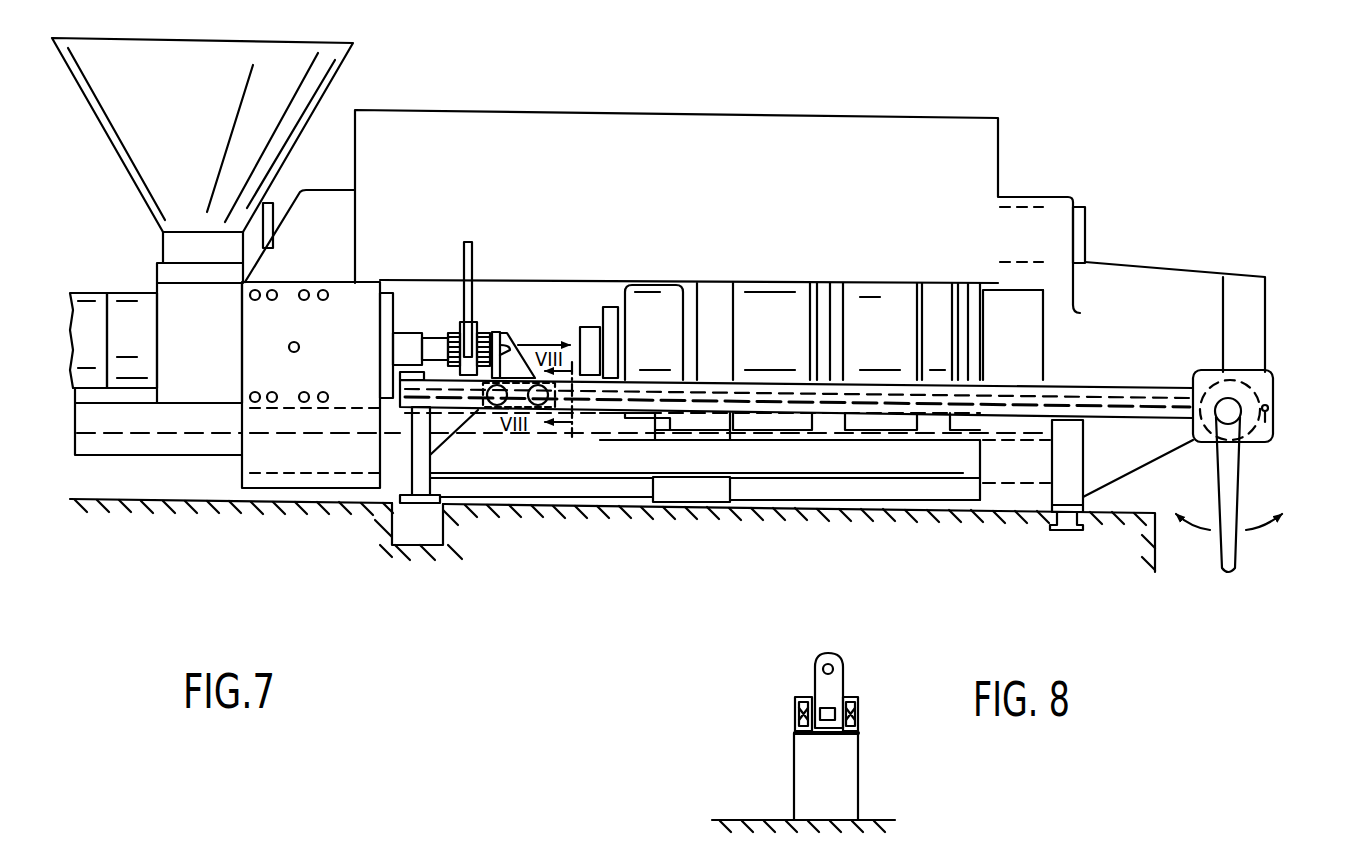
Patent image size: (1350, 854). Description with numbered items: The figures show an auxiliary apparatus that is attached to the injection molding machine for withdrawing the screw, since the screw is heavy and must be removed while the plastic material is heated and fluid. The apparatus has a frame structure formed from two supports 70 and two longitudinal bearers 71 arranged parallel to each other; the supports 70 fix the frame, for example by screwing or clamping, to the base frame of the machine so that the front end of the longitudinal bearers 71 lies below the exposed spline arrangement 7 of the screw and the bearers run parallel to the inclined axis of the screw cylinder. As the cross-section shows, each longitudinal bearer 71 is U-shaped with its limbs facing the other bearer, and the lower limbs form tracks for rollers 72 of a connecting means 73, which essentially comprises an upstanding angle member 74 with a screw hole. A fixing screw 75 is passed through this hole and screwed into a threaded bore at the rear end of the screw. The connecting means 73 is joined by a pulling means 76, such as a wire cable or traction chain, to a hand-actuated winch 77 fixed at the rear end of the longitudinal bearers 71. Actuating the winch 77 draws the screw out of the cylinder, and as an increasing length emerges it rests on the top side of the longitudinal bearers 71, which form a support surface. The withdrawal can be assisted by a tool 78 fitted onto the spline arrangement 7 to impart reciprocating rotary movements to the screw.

In FIG. 7, the spline arrangement 7 is at (489, 331).
In FIG. 7, the support 70 is at (435, 480).
In FIG. 8, the support 70 is at (794, 762).
In FIG. 7, the longitudinal bearer 71 is at (1122, 386).
In FIG. 8, the longitudinal bearer 71 is at (797, 698).
In FIG. 8, the roller 72 is at (797, 713).
In FIG. 8, the connecting means 73 is at (852, 661).
In FIG. 7, the upstanding angle member 74 is at (503, 333).
In FIG. 8, the upstanding angle member 74 is at (815, 665).
In FIG. 7, the fixing screw 75 is at (512, 343).
In FIG. 7, the pulling means 76 is at (895, 400).
In FIG. 7, the hand-actuated winch 77 is at (1240, 428).
In FIG. 7, the tool 78 is at (476, 250).